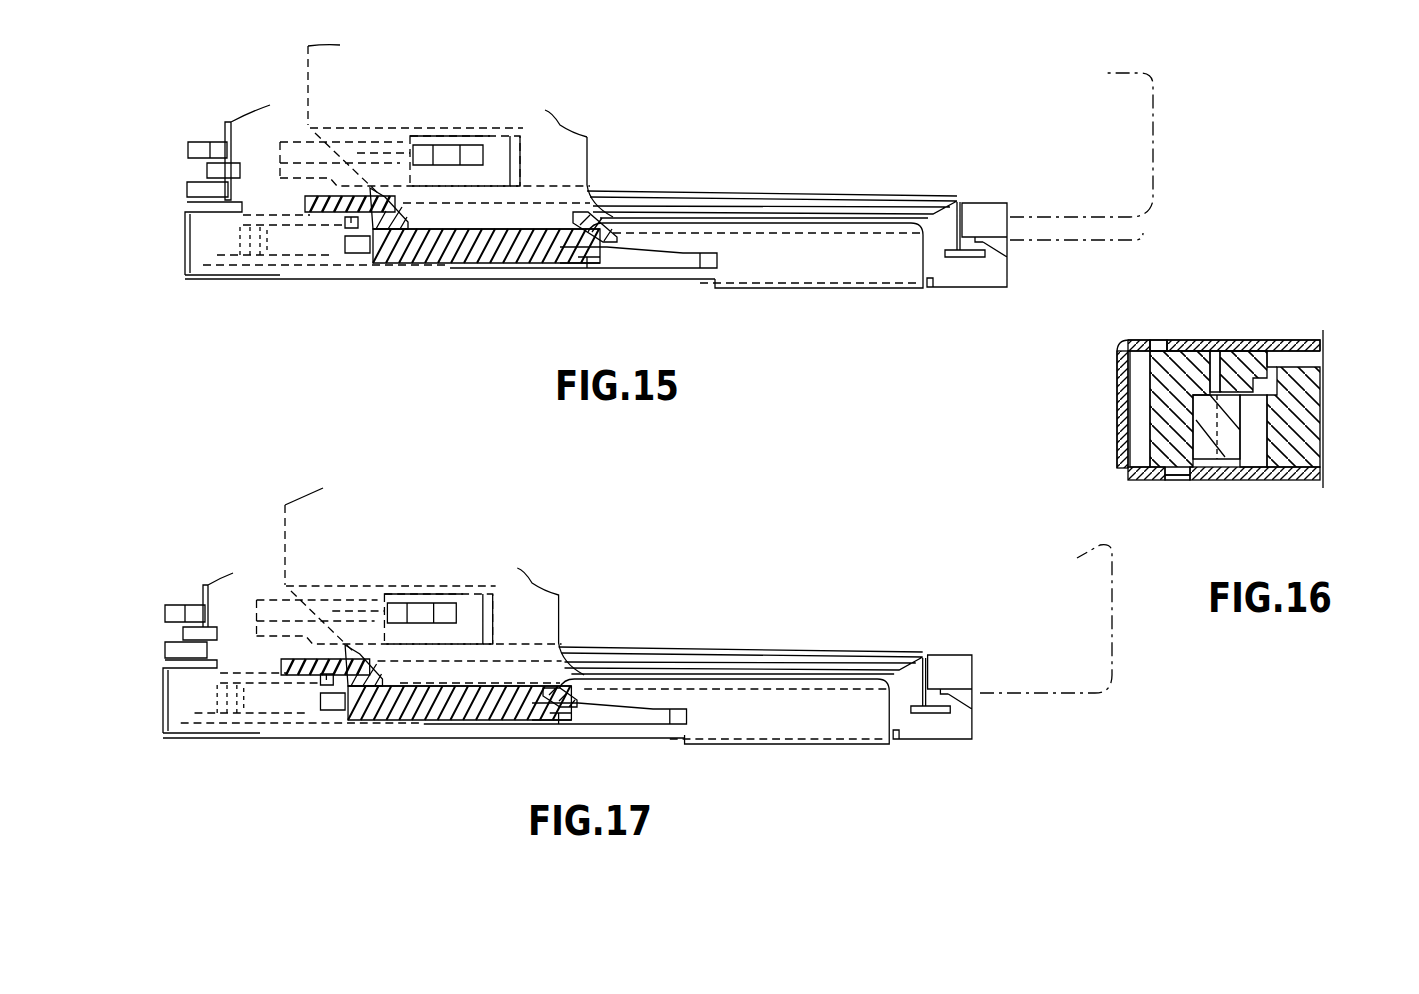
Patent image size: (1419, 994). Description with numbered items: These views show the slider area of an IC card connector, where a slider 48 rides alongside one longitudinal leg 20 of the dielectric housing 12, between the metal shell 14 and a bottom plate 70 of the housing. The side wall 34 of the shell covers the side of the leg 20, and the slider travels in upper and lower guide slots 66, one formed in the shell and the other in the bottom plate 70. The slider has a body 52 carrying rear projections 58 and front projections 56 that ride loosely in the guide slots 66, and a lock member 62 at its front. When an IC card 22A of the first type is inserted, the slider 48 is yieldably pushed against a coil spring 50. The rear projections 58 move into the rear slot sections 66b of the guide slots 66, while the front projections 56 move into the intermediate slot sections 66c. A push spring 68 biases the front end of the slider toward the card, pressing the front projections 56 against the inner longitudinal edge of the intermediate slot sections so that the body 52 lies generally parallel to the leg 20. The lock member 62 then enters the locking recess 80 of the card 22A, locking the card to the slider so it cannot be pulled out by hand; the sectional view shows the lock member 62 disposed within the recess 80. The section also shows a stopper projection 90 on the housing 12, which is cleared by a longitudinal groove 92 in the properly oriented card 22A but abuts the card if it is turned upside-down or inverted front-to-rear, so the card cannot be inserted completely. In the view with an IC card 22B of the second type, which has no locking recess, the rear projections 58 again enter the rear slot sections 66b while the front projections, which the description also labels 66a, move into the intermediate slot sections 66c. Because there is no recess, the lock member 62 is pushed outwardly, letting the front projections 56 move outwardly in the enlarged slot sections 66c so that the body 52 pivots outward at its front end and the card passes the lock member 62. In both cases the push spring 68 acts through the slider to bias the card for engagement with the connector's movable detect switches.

In FIG. 16, the dielectric housing 12 is at (1305, 486).
In FIG. 15, the metal shell 14 is at (546, 127).
In FIG. 16, the metal shell 14 is at (1258, 333).
In FIG. 15, the longitudinal leg 20 is at (960, 273).
In FIG. 17, the longitudinal leg 20 is at (928, 727).
In FIG. 15, the IC card of the first type 22A is at (1133, 150).
In FIG. 16, the IC card of the first type 22A is at (1313, 388).
In FIG. 17, the IC card of the second type 22B is at (1047, 653).
In FIG. 15, the side wall 34 is at (817, 290).
In FIG. 16, the side wall 34 is at (1116, 377).
In FIG. 17, the side wall 34 is at (788, 747).
In FIG. 15, the slider 48 is at (440, 266).
In FIG. 16, the slider 48 is at (1148, 414).
In FIG. 17, the slider 48 is at (446, 716).
In FIG. 15, the coil spring 50 is at (205, 277).
In FIG. 17, the coil spring 50 is at (220, 747).
In FIG. 15, the body 52 is at (493, 228).
In FIG. 16, the body 52 is at (1196, 372).
In FIG. 17, the body 52 is at (481, 728).
In FIG. 15, the front projections 56 is at (570, 255).
In FIG. 16, the front projections 56 is at (1185, 340).
In FIG. 17, the front projections 56 is at (553, 690).
In FIG. 15, the rear projections 58 is at (392, 213).
In FIG. 17, the rear projections 58 is at (383, 675).
In FIG. 15, the lock member 62 is at (593, 227).
In FIG. 16, the lock member 62 is at (1226, 458).
In FIG. 17, the lock member 62 is at (575, 693).
In FIG. 15, the guide slots 66 is at (652, 260).
In FIG. 16, the guide slots 66 is at (1160, 340).
In FIG. 17, the guide slots 66 is at (607, 713).
In FIG. 15, the front projections 66a is at (698, 260).
In FIG. 17, the front projections 66a is at (660, 715).
In FIG. 15, the rear slot sections 66b is at (350, 262).
In FIG. 17, the rear slot sections 66b is at (323, 720).
In FIG. 15, the intermediate slot sections 66c is at (587, 258).
In FIG. 17, the intermediate slot sections 66c is at (560, 717).
In FIG. 15, the push spring 68 is at (490, 287).
In FIG. 16, the push spring 68 is at (1158, 481).
In FIG. 17, the push spring 68 is at (507, 740).
In FIG. 16, the bottom plate 70 is at (1135, 480).
In FIG. 15, the locking recess 80 is at (606, 188).
In FIG. 16, the locking recess 80 is at (1255, 460).
In FIG. 16, the stopper projection 90 is at (1245, 340).
In FIG. 16, the longitudinal groove 92 is at (1300, 340).